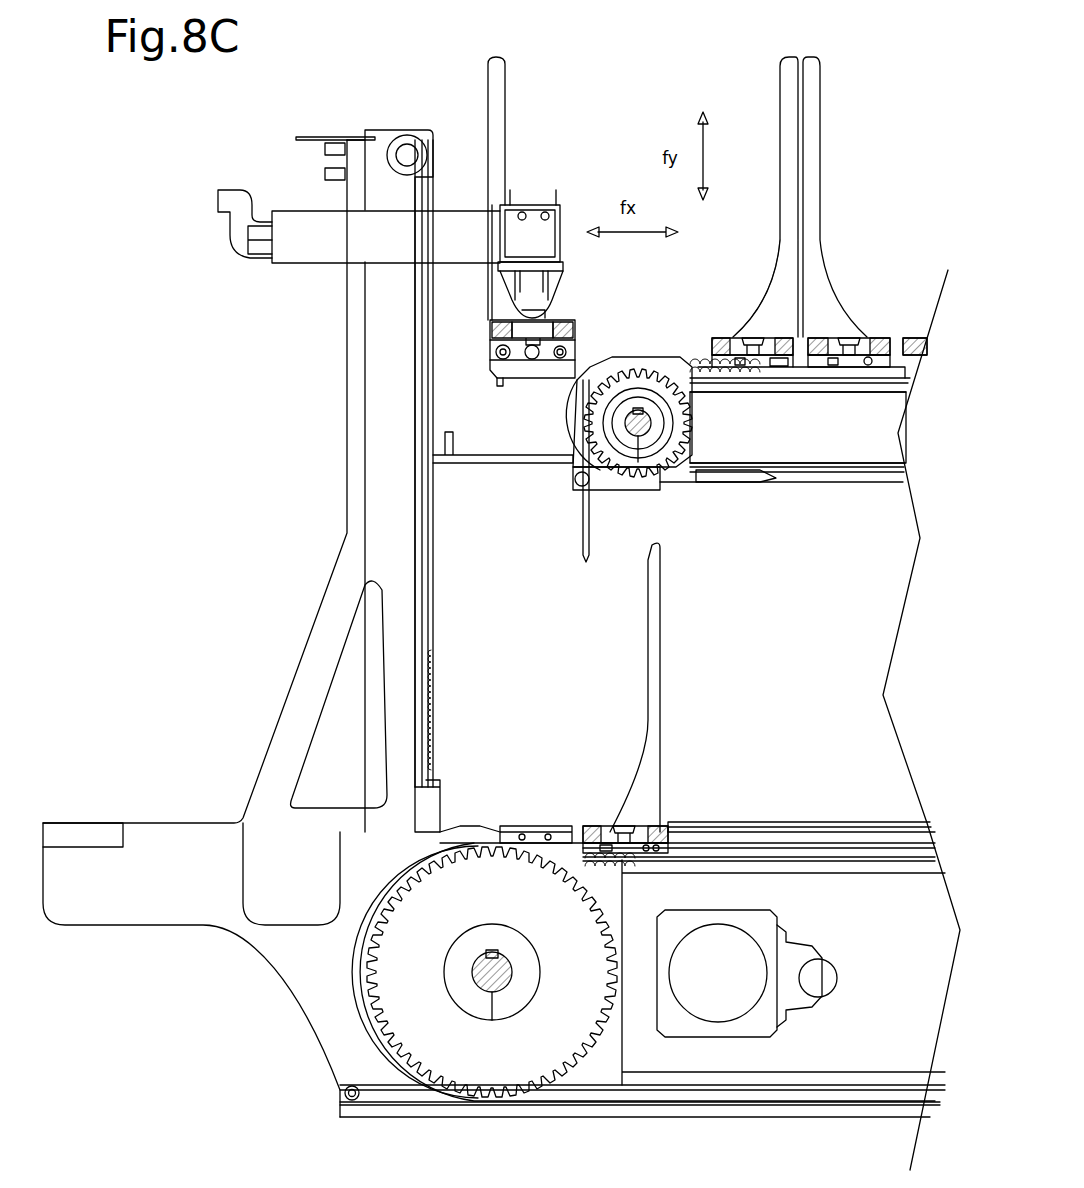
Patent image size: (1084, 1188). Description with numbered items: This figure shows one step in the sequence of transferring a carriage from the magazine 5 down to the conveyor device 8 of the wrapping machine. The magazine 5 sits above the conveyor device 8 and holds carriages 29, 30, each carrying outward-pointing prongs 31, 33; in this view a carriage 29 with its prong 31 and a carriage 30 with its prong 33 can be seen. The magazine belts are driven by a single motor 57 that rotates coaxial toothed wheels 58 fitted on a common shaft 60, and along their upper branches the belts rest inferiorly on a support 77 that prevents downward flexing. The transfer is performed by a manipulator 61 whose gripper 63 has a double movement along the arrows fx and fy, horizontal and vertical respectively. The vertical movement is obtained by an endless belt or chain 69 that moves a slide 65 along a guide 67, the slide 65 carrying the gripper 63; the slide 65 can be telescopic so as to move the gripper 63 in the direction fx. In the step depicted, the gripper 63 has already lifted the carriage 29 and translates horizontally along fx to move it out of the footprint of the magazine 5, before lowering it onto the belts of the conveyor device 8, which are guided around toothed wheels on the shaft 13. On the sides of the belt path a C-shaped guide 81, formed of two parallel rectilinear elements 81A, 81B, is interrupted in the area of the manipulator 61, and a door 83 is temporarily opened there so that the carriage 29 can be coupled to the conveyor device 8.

The magazine 5 is at (883, 497).
The conveyor device 8 is at (698, 782).
The shaft 13 is at (487, 980).
The carriage 29 is at (567, 330).
The carriage 30 is at (722, 340).
The prong 31 is at (505, 78).
The prong 33 is at (772, 85).
The motor 57 is at (627, 490).
The toothed wheels 58 is at (652, 460).
The common shaft 60 is at (630, 416).
The manipulator 61 is at (543, 178).
The gripper 63 is at (567, 313).
The slide 65 is at (303, 240).
The guide 67 is at (413, 422).
The endless belt or chain 69 is at (432, 702).
The support 77 is at (858, 383).
The C-shaped guide 81 is at (855, 820).
The rectilinear element 81A is at (778, 834).
The rectilinear element 81B is at (810, 866).
The door 83 is at (530, 826).